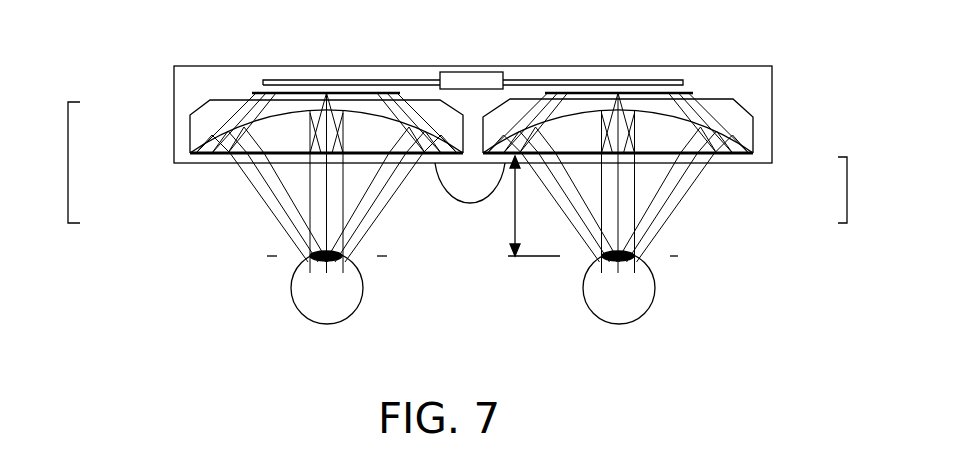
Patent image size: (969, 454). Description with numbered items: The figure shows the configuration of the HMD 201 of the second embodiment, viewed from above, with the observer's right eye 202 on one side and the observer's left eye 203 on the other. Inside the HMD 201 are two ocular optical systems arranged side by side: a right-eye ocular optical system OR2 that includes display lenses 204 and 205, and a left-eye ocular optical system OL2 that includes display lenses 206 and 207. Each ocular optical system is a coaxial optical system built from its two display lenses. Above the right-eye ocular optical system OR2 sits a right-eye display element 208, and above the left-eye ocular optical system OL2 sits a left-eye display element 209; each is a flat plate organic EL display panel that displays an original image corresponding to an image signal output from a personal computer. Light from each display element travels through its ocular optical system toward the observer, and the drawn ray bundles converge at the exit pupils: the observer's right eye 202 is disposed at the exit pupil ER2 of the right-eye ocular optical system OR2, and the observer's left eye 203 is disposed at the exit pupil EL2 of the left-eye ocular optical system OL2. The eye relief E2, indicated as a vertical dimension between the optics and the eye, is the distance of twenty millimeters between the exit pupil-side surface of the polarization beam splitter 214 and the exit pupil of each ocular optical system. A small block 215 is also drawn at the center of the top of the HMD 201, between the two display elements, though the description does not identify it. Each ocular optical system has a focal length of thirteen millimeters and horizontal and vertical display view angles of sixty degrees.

The HMD 201 is at (185, 93).
The observer's right eye 202 is at (643, 288).
The observer's left eye 203 is at (350, 290).
The display lens 204 is at (737, 166).
The display lens 205 is at (755, 133).
The display lens 206 is at (200, 168).
The display lens 207 is at (195, 130).
The right-eye display element 208 is at (668, 82).
The left-eye display element 209 is at (360, 82).
The polarization beam splitter 214 is at (470, 198).
The sensor module 215 is at (477, 72).
The eye relief E2 is at (534, 206).
The exit pupil EL2 is at (383, 257).
The exit pupil ER2 is at (560, 256).
The left-eye ocular optical system OL2 is at (49, 162).
The right-eye ocular optical system OR2 is at (869, 190).